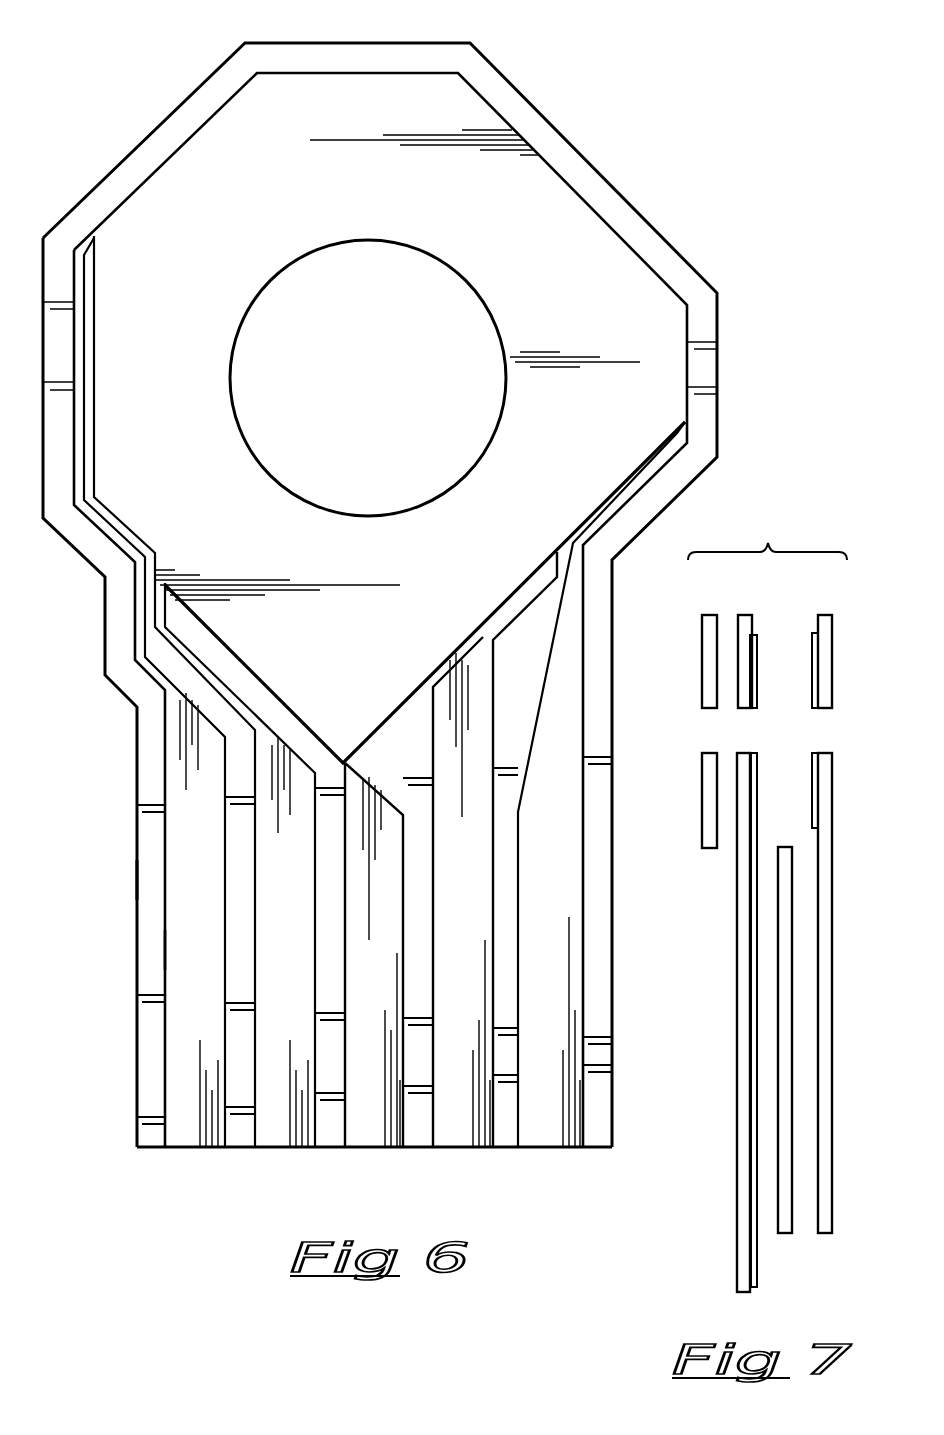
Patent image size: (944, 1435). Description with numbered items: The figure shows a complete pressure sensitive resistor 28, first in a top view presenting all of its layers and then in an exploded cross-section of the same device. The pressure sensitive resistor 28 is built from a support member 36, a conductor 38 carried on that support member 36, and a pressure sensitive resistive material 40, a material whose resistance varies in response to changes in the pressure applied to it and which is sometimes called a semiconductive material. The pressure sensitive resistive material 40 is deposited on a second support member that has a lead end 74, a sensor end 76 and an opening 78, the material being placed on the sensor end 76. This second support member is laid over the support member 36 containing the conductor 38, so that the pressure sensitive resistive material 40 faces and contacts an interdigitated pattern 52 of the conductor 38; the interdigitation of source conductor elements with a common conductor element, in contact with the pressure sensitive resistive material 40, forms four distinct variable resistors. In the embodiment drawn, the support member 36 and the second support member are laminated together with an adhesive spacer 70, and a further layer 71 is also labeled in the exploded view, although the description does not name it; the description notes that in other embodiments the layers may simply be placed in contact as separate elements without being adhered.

In FIG. 6, the pressure sensitive resistor 28 is at (137, 1068).
In FIG. 6, the support member 36 is at (155, 882).
In FIG. 7, the support member 36 is at (743, 1257).
In FIG. 6, the conductor 38 is at (165, 945).
In FIG. 7, the conductor 38 is at (750, 1168).
In FIG. 6, the pressure sensitive resistive material 40 is at (233, 143).
In FIG. 7, the pressure sensitive resistive material 40 is at (813, 677).
In FIG. 7, the interdigitated pattern 52 is at (750, 845).
In FIG. 7, the adhesive spacer 70 is at (785, 1218).
In FIG. 7, the adhesive layer 71 is at (828, 847).
In FIG. 7, the lead end 74 is at (825, 1117).
In FIG. 7, the sensor end 76 is at (825, 647).
In FIG. 7, the opening 78 is at (822, 733).